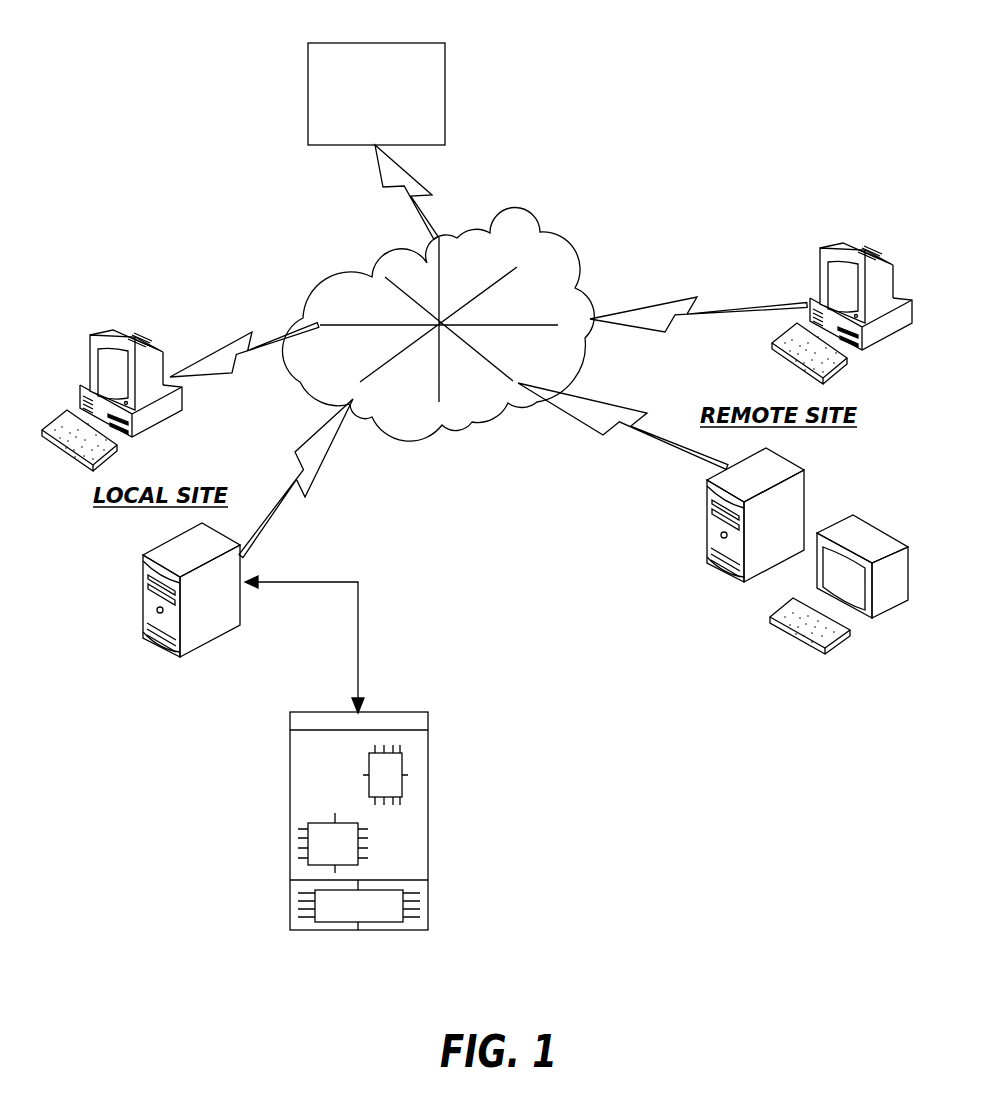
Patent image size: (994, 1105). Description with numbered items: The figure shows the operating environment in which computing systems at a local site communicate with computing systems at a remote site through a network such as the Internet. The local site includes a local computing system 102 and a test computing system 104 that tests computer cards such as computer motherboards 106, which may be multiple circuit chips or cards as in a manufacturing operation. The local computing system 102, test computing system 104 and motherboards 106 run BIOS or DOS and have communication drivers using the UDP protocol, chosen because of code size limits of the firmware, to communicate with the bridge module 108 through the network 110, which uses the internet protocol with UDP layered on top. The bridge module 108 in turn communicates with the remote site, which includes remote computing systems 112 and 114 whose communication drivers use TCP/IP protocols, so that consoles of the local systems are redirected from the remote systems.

The local computing system 102 is at (98, 333).
The test computing system 104 is at (187, 657).
The computer motherboards 106 is at (428, 825).
The bridge module 108 is at (378, 43).
The network 110 is at (517, 486).
The remote computing system 112 is at (823, 248).
The remote computing system 114 is at (847, 517).